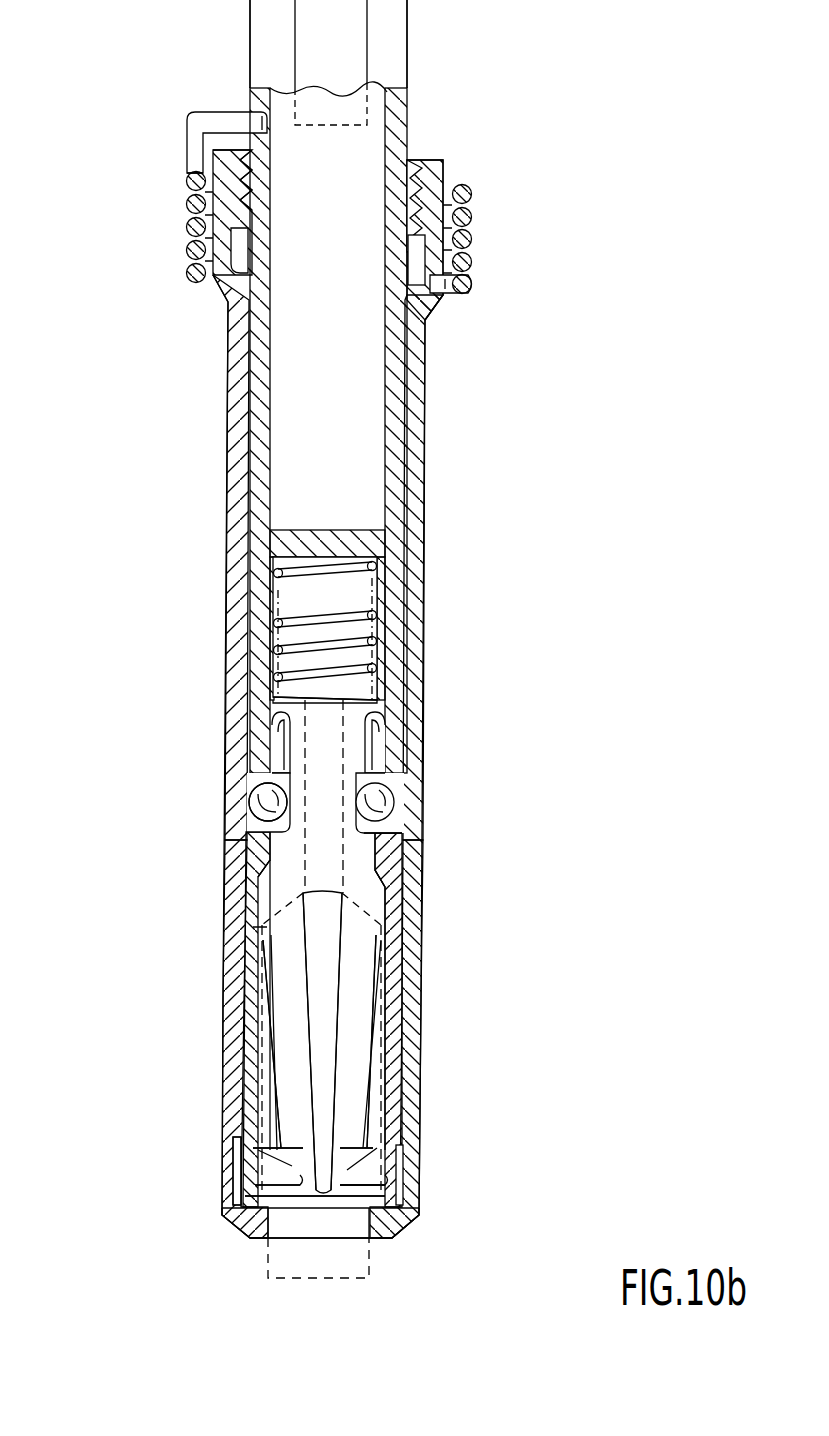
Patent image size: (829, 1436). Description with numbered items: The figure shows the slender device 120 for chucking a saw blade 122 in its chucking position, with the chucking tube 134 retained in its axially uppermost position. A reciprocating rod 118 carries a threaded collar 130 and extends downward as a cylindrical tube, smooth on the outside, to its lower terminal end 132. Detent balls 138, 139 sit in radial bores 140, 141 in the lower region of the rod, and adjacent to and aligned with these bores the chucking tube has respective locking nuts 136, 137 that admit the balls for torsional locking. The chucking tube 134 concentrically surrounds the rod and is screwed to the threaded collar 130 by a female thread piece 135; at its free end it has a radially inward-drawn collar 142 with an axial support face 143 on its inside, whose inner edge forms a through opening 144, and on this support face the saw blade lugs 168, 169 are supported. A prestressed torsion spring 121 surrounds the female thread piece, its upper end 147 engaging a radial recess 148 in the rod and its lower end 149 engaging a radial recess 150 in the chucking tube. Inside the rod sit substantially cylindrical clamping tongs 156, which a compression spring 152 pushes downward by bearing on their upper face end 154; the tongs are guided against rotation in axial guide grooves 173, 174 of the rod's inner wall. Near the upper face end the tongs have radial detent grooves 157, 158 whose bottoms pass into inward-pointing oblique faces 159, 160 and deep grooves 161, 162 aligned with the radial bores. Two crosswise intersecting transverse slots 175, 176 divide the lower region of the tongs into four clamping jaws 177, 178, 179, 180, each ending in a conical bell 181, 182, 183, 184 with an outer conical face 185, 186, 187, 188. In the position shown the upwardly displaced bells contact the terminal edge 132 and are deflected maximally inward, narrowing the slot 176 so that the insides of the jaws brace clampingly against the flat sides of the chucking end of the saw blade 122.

The reciprocating rod 118 is at (413, 103).
The device 120 is at (482, 462).
The torsion spring 121 is at (474, 194).
The saw blade 122 is at (369, 1278).
The threaded collar 130 is at (430, 150).
The lower terminal end 132 is at (252, 1200).
The chucking tube 134 is at (426, 370).
The female thread piece 135 is at (440, 176).
The locking nut 136 is at (256, 798).
The locking nut 137 is at (199, 814).
The detent ball 138 is at (388, 800).
The detent ball 139 is at (246, 838).
The radial bore 140 is at (398, 786).
The radial bore 141 is at (258, 858).
The collar 142 is at (394, 1236).
The axial support face 143 is at (412, 1217).
The through opening 144 is at (258, 1243).
The upper end 147 is at (192, 152).
The radial recess 148 is at (249, 111).
The lower end 149 is at (472, 284).
The radial recess 150 is at (450, 282).
The compression spring 152 is at (356, 578).
The upper face end 154 is at (348, 697).
The clamping tongs 156 is at (372, 718).
The radial detent groove 157 is at (370, 748).
The radial detent groove 158 is at (272, 718).
The oblique face 159 is at (398, 824).
The oblique face 160 is at (264, 773).
The deep groove 161 is at (398, 845).
The deep groove 162 is at (268, 876).
The saw blade lug 168 is at (420, 1210).
The saw blade lug 169 is at (214, 1213).
The axial guide groove 173 is at (387, 900).
The axial guide groove 174 is at (272, 934).
The transverse slot 175 is at (333, 975).
The transverse slot 176 is at (425, 1041).
The clamping jaw 177 is at (361, 1034).
The clamping jaw 178 is at (286, 1022).
The clamping jaw 179 is at (457, 1041).
The clamping jaw 180 is at (192, 1044).
The conical bell 181 is at (352, 1166).
The conical bell 182 is at (290, 1163).
The conical bell 183 is at (470, 1120).
The conical bell 184 is at (200, 1119).
The outer conical face 185 is at (382, 1170).
The outer conical face 186 is at (262, 1170).
The outer conical face 187 is at (470, 1168).
The outer conical face 188 is at (170, 1168).